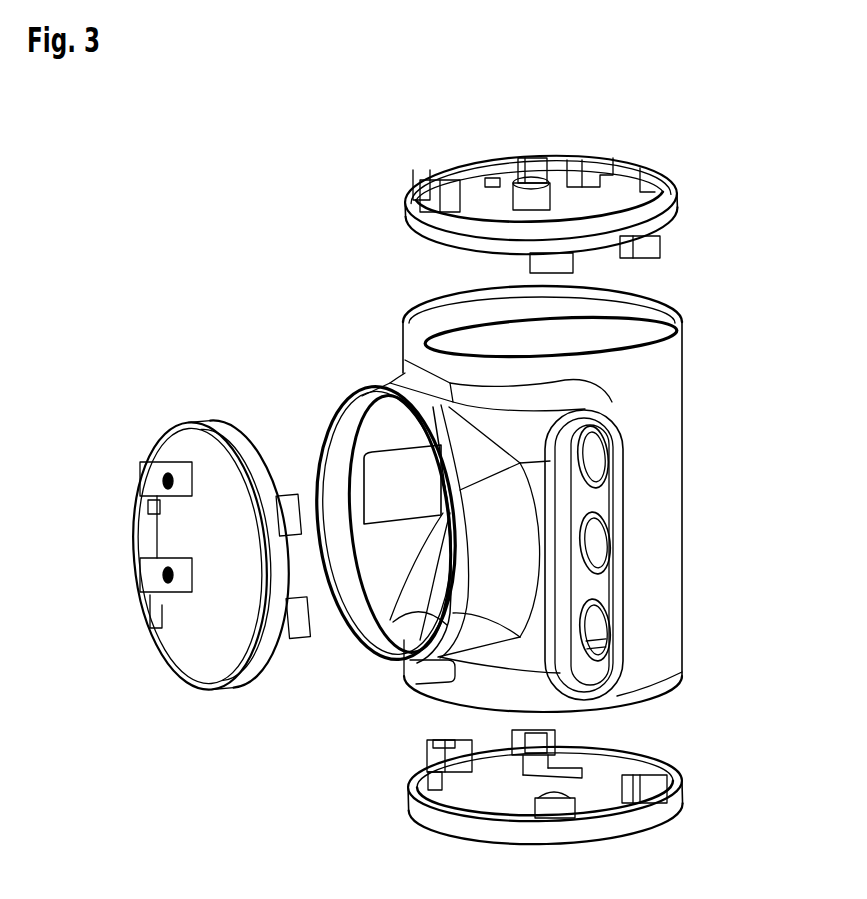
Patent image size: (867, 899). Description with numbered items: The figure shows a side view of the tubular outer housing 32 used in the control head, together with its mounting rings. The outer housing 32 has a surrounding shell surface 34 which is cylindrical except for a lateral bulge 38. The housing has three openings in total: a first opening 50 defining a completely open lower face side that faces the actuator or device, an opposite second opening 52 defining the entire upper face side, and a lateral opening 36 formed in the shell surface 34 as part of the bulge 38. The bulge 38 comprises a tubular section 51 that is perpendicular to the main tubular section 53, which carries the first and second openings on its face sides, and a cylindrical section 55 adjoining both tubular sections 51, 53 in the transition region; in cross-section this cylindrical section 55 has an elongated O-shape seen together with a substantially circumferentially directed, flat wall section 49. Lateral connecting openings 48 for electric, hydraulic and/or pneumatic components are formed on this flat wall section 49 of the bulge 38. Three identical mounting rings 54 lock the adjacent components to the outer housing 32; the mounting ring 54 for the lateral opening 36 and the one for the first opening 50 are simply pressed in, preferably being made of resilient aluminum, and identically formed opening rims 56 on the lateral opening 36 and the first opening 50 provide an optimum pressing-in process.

The outer housing 32 is at (703, 489).
The shell surface 34 is at (647, 660).
The lateral opening 36 is at (378, 575).
The lateral bulge 38 is at (527, 589).
The lateral connecting openings 48 is at (597, 550).
The flat wall section 49 is at (593, 503).
The first opening 50 is at (666, 699).
The tubular section 51 is at (520, 562).
The second opening 52 is at (643, 315).
The tubular section 53 is at (660, 397).
The mounting ring 54 is at (653, 185).
The cylindrical section 55 is at (630, 423).
The opening rim 56 is at (355, 406).